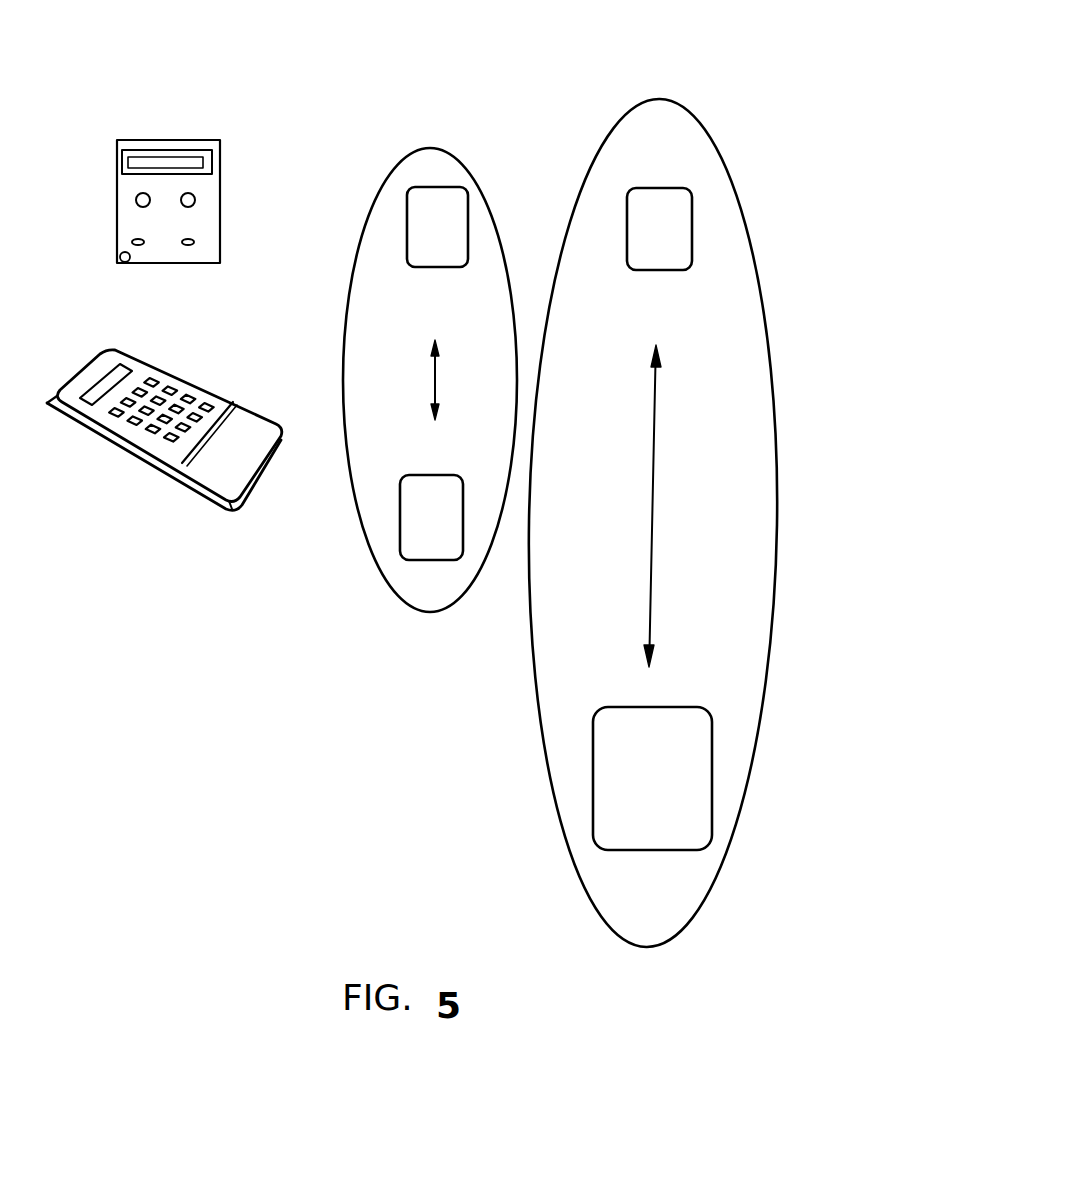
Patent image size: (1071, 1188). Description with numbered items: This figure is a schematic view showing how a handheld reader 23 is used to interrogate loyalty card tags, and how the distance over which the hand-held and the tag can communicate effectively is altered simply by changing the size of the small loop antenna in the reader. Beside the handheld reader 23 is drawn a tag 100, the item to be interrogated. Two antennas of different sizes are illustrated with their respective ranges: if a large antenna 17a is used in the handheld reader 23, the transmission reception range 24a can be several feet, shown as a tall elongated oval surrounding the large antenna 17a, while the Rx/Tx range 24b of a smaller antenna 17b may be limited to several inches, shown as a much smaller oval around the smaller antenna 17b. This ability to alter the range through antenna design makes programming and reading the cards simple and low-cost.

The remote control device 100 is at (172, 138).
The handheld reader 23 is at (123, 450).
The transmission reception range 24a is at (640, 105).
The Rx/Tx range 24b is at (425, 148).
The large antenna 17a is at (595, 770).
The smaller antenna 17b is at (400, 522).